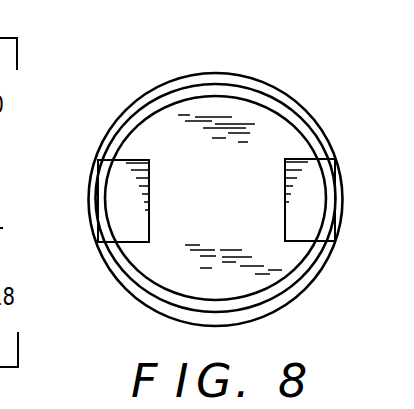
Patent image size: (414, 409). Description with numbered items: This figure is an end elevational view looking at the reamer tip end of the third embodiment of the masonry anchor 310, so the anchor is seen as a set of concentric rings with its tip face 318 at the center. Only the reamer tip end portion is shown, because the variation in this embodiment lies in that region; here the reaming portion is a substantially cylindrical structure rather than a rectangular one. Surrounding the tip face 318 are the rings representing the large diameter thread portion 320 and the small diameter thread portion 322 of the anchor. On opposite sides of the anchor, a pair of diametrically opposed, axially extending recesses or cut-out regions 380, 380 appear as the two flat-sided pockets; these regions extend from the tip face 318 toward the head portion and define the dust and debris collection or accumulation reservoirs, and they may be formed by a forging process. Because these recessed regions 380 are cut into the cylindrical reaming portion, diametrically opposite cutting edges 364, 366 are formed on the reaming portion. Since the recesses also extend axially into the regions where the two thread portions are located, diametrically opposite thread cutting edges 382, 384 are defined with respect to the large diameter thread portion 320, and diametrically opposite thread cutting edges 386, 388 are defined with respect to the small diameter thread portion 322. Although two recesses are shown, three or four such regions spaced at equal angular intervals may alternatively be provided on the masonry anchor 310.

The masonry anchor 310 is at (297, 78).
The masonry anchor tip face 318 is at (277, 262).
The large diameter thread portion 320 is at (240, 79).
The small diameter thread portion 322 is at (193, 90).
The cutting edge 364 is at (108, 178).
The cutting edge 366 is at (313, 240).
The recessed or cut-out region 380 is at (285, 189).
The thread cutting edge 382 is at (97, 172).
The thread cutting edge 384 is at (339, 241).
The thread cutting edge 386 is at (100, 168).
The thread cutting edge 388 is at (342, 216).